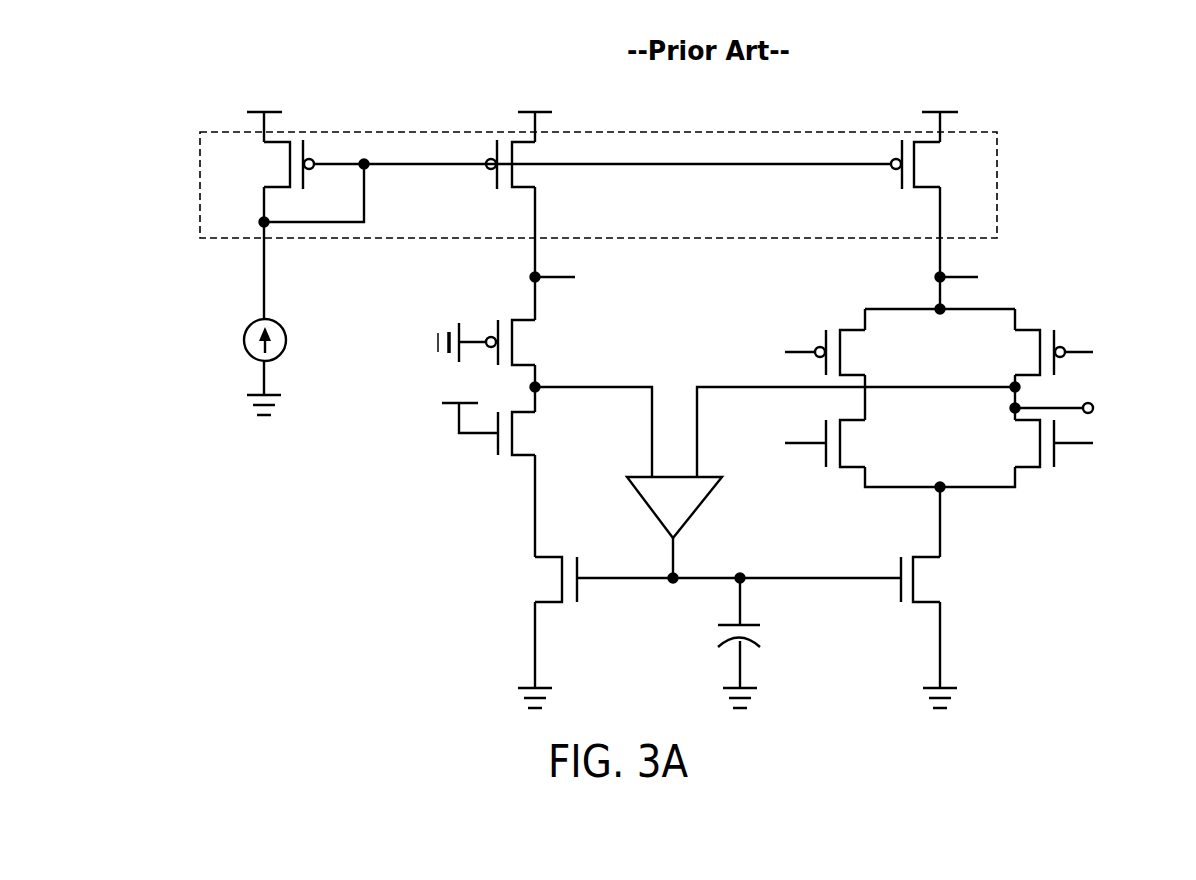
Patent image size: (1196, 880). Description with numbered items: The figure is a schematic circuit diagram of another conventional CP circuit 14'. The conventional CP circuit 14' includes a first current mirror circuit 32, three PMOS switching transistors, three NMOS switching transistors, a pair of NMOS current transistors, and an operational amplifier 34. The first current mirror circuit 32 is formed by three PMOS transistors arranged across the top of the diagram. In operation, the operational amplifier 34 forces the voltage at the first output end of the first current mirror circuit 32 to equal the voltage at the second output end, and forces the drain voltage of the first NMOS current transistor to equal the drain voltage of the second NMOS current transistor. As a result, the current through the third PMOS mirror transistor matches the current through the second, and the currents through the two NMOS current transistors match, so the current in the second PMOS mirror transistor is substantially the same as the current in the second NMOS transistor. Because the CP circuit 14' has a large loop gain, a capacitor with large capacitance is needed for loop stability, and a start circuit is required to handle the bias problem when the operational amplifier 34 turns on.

The conventional CP circuit 14' is at (668, 375).
The first current mirror circuit 32 is at (997, 183).
The operational amplifier 34 is at (698, 507).